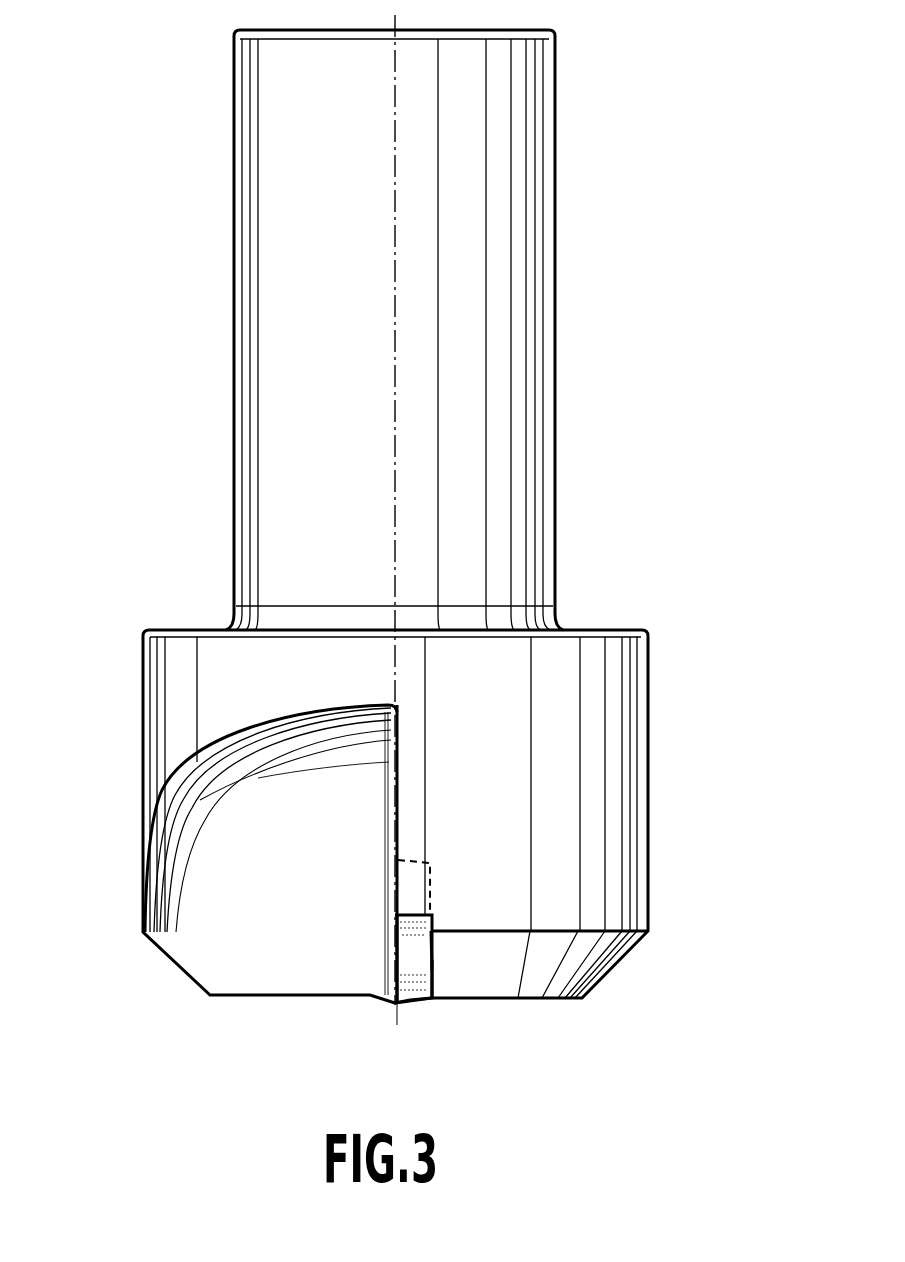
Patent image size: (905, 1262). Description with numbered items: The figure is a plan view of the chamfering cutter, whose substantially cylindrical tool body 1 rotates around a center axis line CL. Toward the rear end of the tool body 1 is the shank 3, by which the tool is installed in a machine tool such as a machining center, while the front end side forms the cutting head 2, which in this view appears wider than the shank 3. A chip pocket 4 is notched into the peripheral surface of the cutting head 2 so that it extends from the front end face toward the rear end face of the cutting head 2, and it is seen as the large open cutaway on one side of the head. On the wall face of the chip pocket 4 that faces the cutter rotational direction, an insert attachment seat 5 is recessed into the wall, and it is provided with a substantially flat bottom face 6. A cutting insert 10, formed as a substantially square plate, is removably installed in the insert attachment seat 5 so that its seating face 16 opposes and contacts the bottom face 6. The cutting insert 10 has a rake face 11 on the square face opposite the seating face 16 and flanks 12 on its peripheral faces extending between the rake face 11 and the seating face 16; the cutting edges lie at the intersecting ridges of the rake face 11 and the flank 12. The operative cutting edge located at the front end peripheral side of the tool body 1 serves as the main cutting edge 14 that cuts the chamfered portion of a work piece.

The tool body 1 is at (413, 547).
The cutting head 2 is at (408, 855).
The shank 3 is at (575, 158).
The chip pocket 4 is at (218, 845).
The insert attachment seat 5 is at (418, 945).
The bottom face 6 is at (425, 955).
The cutting insert 10 is at (420, 1015).
The rake face 11 is at (395, 958).
The flank 12 is at (416, 978).
The main cutting edge 14 is at (397, 980).
The seating face 16 is at (432, 970).
The center axis line CL is at (396, 292).